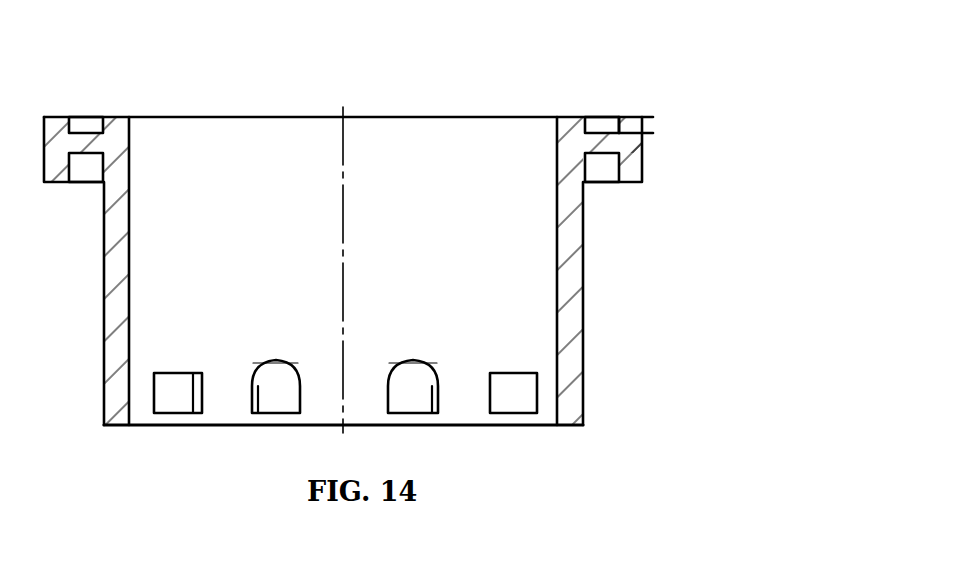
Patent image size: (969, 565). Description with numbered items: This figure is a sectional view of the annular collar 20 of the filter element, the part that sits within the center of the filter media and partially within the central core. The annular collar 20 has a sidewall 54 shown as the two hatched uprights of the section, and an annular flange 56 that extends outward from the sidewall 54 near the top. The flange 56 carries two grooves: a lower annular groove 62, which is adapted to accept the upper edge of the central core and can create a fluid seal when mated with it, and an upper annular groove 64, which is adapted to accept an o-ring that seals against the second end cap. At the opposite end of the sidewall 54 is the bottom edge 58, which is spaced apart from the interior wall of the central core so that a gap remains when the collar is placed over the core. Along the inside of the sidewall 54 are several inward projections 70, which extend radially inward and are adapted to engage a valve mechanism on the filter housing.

The annular collar 20 is at (592, 423).
The sidewall 54 is at (117, 365).
The annular flange 56 is at (650, 236).
The bottom edge 58 is at (572, 427).
The lower annular groove 62 is at (626, 155).
The upper annular groove 64 is at (600, 125).
The inward projections 70 is at (172, 377).